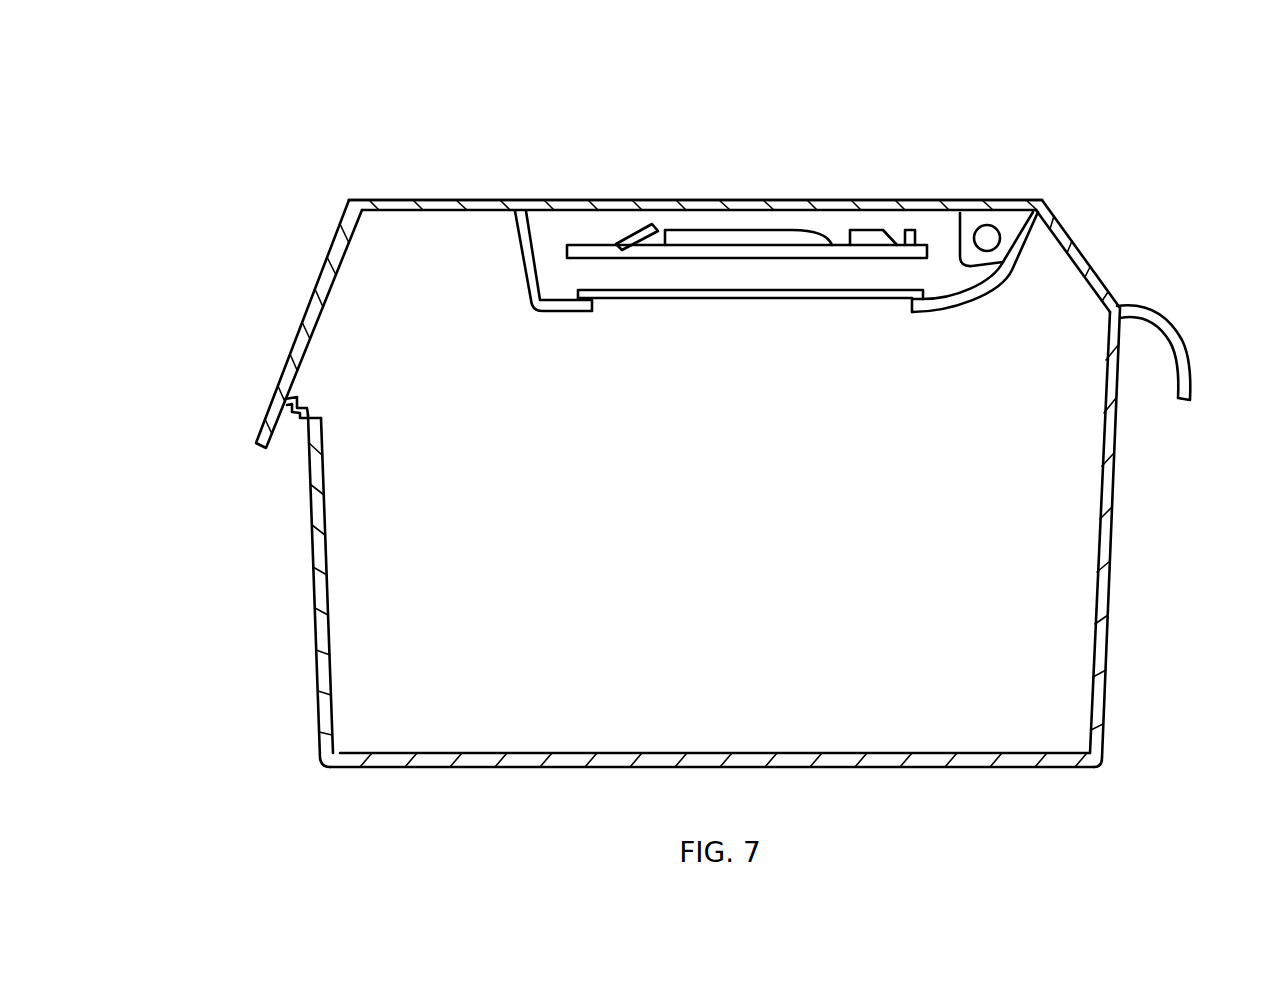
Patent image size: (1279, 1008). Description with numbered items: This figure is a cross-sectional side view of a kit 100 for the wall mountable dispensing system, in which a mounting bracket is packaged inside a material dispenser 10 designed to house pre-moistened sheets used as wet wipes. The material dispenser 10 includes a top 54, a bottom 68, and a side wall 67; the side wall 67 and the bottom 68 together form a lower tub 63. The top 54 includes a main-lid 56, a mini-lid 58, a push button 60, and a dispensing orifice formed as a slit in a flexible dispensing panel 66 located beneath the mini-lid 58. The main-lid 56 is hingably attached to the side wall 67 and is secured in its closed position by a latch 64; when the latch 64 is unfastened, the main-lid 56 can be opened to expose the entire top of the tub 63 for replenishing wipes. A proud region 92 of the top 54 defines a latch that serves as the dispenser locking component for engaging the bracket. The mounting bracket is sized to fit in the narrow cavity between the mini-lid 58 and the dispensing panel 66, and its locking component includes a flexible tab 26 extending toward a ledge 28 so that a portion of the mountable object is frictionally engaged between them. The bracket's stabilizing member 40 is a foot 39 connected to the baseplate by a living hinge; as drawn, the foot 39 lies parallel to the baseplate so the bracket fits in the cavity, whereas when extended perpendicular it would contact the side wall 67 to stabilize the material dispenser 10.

The kit 100 is at (250, 100).
The material dispenser 10 is at (180, 573).
The push button 60 is at (468, 203).
The mini-lid 58 is at (765, 203).
The main-lid 56 is at (292, 332).
The top 54 is at (1082, 247).
The proud region 92 is at (1182, 353).
The side wall 67 is at (1113, 642).
The lower tub 63 is at (316, 625).
The latch 64 is at (260, 416).
The bottom 68 is at (978, 757).
The dispensing panel 66 is at (710, 300).
The flexible tab 26 is at (632, 229).
The ledge 28 is at (722, 236).
The foot 39 is at (857, 240).
The stabilizing member 40 is at (868, 237).